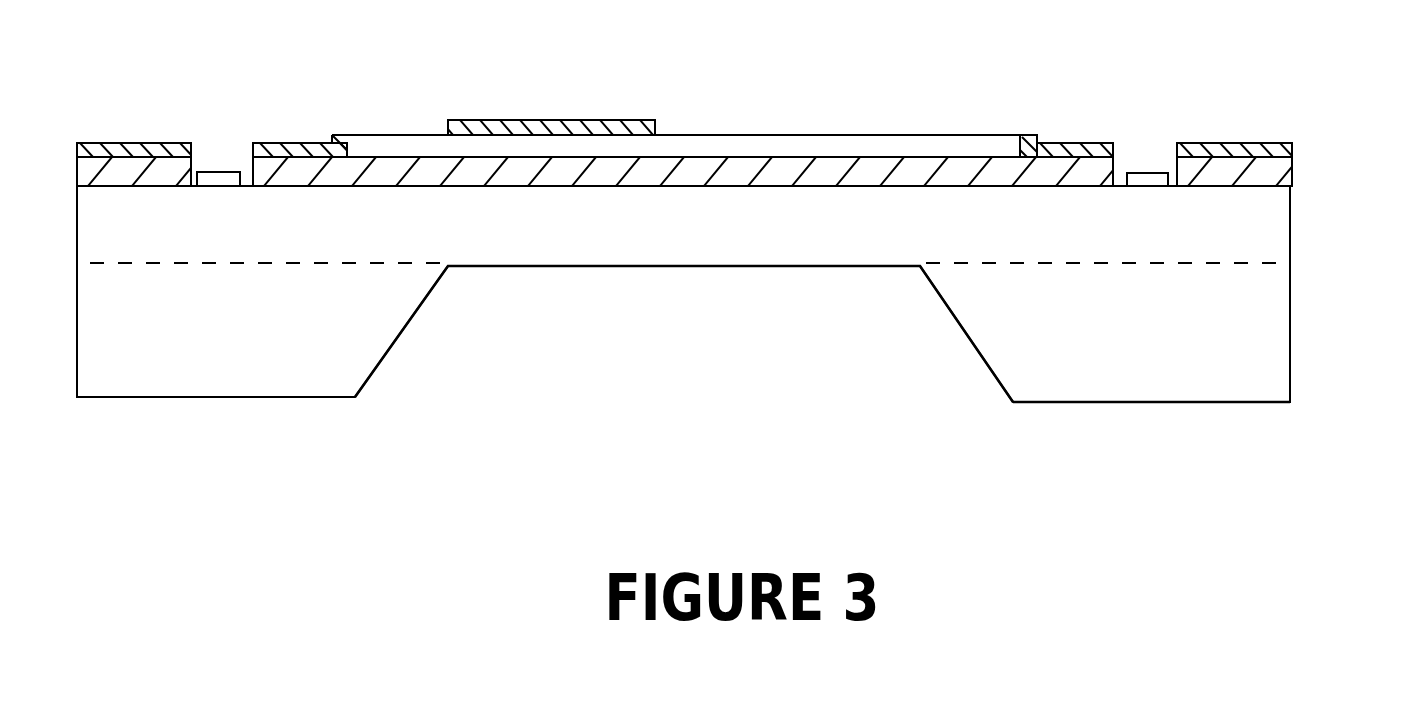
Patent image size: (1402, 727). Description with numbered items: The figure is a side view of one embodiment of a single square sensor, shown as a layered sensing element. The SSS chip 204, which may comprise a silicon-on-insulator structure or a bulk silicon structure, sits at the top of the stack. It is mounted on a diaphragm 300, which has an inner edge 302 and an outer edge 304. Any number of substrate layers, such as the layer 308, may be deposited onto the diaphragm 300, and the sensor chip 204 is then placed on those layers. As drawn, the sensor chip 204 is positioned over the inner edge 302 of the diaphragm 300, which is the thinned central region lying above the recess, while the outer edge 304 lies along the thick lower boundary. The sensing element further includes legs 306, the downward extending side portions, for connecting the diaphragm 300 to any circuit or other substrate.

The SSS chip 204 is at (543, 120).
The diaphragm 300 is at (1292, 236).
The inner edge 302 is at (519, 283).
The outer edge 304 is at (1263, 411).
The legs 306 is at (1292, 355).
The substrate layer 308 is at (1292, 180).